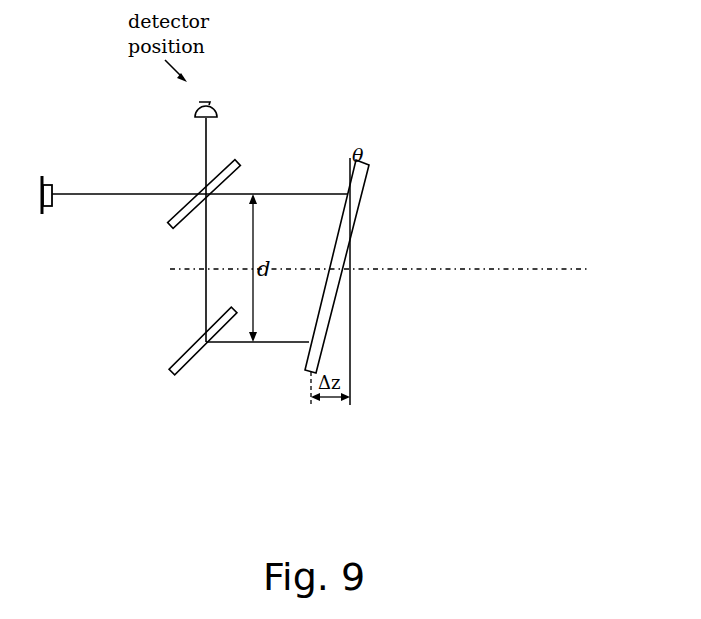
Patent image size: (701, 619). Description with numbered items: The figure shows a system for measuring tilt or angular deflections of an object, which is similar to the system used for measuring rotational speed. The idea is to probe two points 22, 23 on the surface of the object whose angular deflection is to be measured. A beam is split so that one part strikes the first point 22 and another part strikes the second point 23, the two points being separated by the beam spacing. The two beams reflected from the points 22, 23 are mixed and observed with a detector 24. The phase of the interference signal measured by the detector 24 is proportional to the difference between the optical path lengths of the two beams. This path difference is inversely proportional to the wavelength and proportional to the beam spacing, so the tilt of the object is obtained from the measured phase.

The probed point 22 is at (345, 190).
The probed point 23 is at (305, 336).
The detector 24 is at (216, 110).